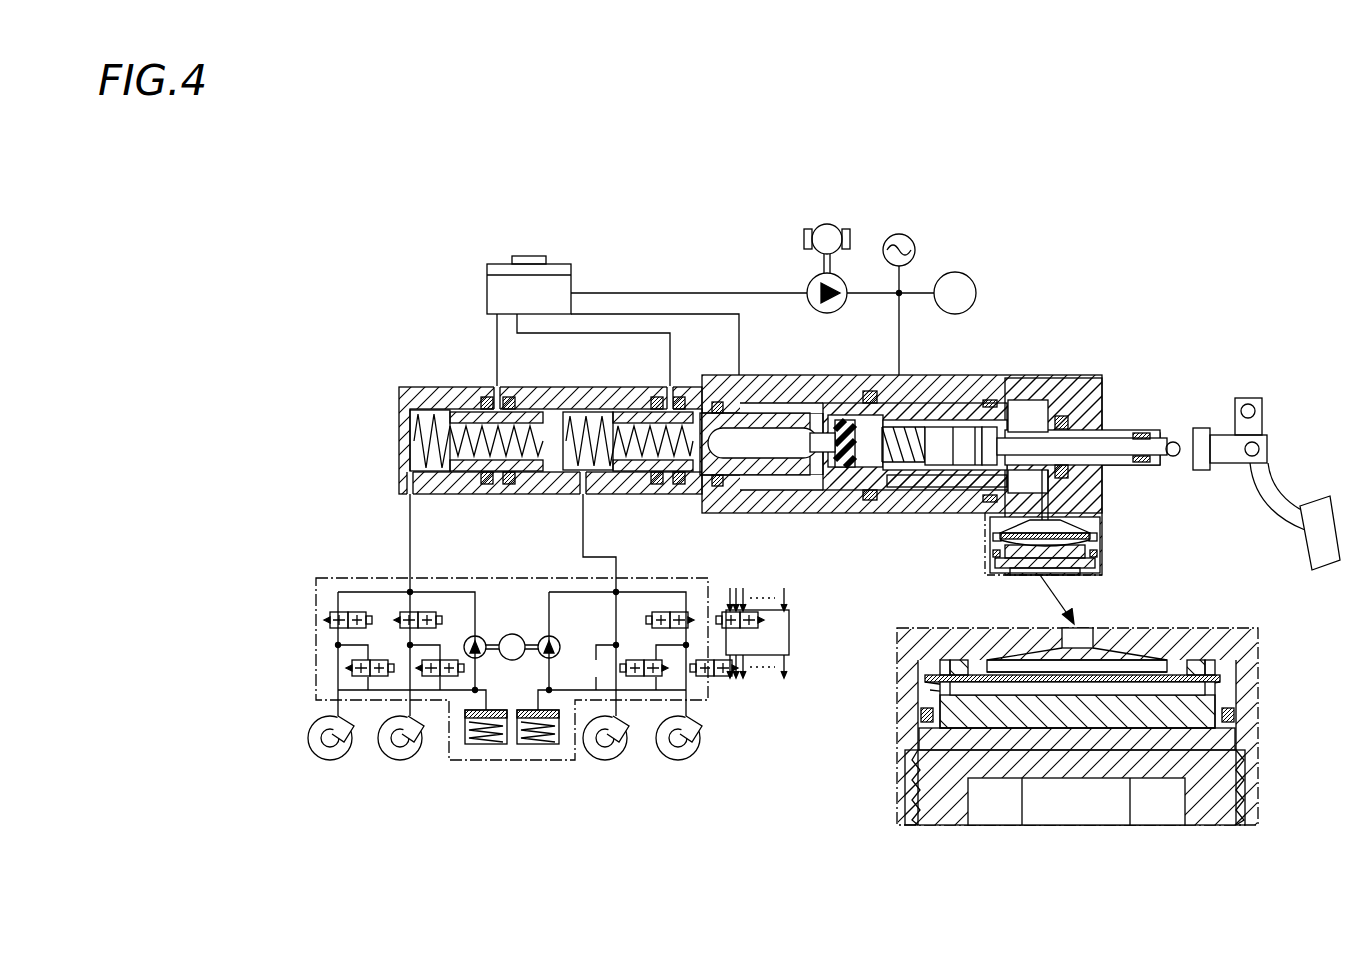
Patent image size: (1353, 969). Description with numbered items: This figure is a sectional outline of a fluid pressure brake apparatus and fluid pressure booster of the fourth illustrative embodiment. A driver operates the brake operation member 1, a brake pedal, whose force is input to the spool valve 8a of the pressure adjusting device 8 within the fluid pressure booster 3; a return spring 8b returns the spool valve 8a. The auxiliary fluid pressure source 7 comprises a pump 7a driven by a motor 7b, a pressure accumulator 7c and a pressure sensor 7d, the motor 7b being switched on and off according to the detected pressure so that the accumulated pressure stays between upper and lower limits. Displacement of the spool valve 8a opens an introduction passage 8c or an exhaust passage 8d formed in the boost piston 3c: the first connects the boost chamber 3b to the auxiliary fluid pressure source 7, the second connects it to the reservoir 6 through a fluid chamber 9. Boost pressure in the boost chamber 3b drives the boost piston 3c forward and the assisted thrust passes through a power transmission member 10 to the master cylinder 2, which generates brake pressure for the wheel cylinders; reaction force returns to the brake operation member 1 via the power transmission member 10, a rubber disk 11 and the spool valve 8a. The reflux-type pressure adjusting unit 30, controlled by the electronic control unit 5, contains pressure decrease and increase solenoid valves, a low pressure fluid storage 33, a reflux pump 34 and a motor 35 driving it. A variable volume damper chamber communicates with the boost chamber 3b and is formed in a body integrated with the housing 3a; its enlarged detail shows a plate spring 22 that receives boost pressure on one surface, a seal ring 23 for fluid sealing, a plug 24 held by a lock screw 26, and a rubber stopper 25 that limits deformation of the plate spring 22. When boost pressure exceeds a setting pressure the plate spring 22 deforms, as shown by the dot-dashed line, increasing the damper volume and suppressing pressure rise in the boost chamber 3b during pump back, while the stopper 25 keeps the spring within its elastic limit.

The brake operation member 1 is at (1320, 505).
The master cylinder 2 is at (572, 434).
The fluid pressure booster 3 is at (940, 456).
The housing 3a is at (1088, 397).
The boost chamber 3b is at (1047, 384).
The boost piston 3c is at (978, 515).
The electronic control unit 5 is at (790, 633).
The reservoir 6 is at (570, 268).
The auxiliary fluid pressure source 7 is at (872, 239).
The pump 7a is at (808, 282).
The motor 7b is at (822, 224).
The pressure accumulator 7c is at (910, 236).
The pressure sensor 7d is at (965, 275).
The pressure adjusting device 8 is at (906, 446).
The spool valve 8a is at (1018, 478).
The return spring 8b is at (878, 420).
The introduction passage 8c is at (962, 420).
The exhaust passage 8d is at (892, 492).
The fluid chamber 9 is at (767, 485).
The power transmission member 10 is at (782, 478).
The rubber disk 11 is at (840, 492).
The plate spring 22 is at (1215, 680).
The seal ring 23 is at (1197, 660).
The plug 24 is at (1220, 742).
The rubber stopper 25 is at (1190, 708).
The lock screw 26 is at (1225, 792).
The reflux-type pressure adjusting unit 30 is at (524, 651).
The low pressure fluid storage 33 is at (530, 743).
The reflux pump 34 is at (478, 636).
The motor 35 is at (520, 634).